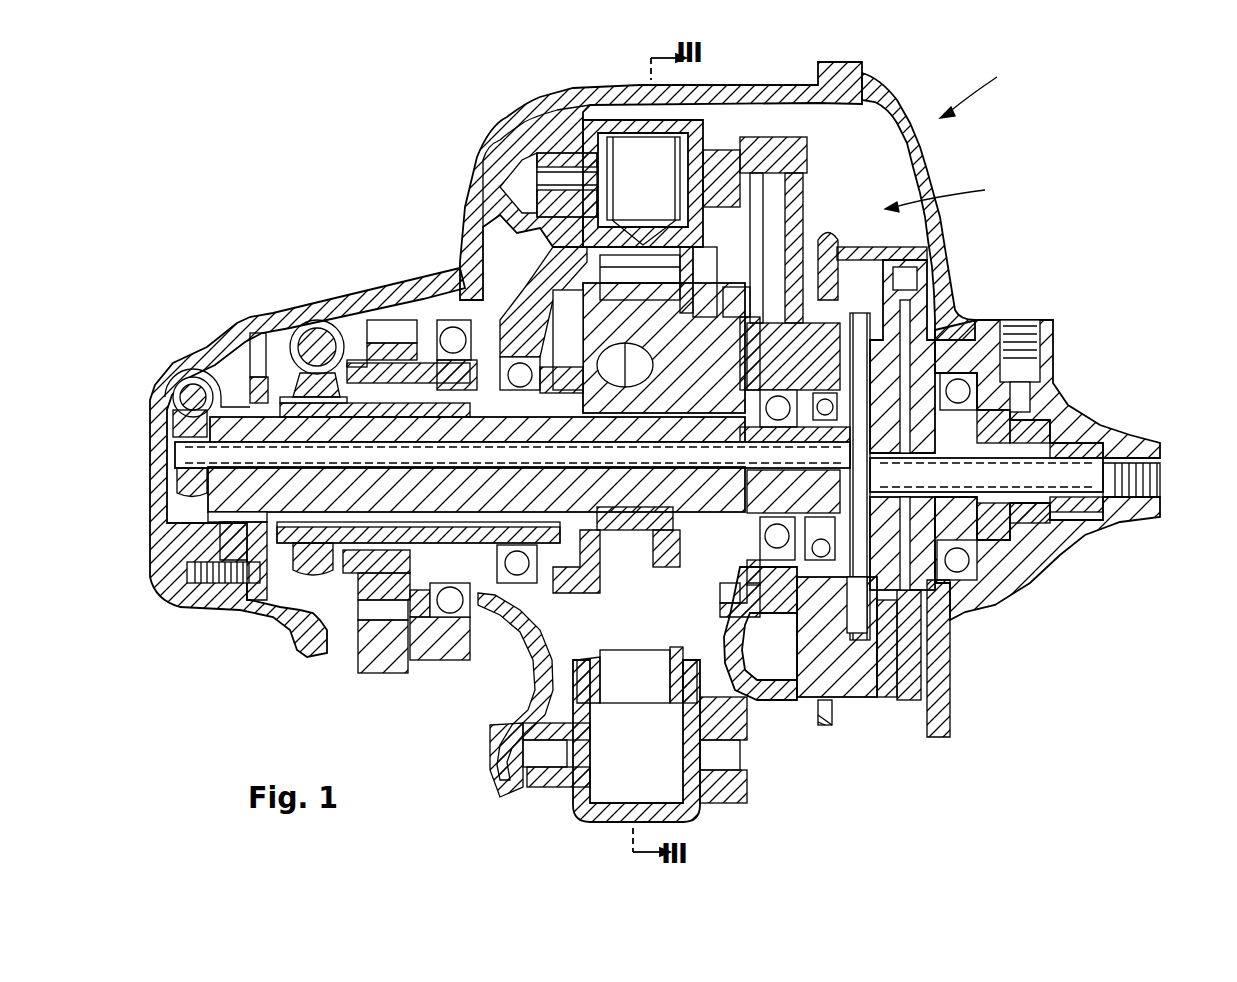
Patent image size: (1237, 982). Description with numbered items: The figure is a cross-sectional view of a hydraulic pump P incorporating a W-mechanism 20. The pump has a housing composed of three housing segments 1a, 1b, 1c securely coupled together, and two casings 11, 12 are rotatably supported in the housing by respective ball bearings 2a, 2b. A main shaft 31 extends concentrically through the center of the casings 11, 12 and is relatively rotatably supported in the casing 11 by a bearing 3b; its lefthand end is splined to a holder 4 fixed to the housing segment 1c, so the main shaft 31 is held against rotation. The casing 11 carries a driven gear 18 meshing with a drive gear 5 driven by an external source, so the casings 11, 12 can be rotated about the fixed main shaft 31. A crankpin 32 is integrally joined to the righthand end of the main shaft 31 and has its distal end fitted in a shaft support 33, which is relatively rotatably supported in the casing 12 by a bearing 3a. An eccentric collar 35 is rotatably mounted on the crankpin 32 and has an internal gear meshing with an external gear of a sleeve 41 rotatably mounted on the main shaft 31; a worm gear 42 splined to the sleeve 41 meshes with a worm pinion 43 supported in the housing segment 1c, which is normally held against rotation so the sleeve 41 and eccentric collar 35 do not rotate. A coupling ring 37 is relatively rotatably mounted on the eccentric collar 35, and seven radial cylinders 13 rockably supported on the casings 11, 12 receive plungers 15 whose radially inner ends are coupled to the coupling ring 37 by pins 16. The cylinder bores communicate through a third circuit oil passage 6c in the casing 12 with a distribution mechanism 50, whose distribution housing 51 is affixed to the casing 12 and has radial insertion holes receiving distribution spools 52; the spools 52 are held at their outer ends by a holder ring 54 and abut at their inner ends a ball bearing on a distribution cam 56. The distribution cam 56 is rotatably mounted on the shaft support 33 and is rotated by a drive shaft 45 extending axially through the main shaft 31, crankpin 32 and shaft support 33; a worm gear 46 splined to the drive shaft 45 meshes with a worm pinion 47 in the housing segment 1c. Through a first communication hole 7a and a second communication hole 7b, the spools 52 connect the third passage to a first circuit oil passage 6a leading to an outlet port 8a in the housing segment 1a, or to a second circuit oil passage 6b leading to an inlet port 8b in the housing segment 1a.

The housing segment 1a is at (928, 170).
The housing segment 1b is at (785, 86).
The housing segment 1c is at (380, 297).
The ball bearing 2a is at (967, 577).
The ball bearing 2b is at (473, 617).
The bearing 3a is at (790, 615).
The bearing 3b is at (545, 603).
The holder 4 is at (255, 333).
The drive gear 5 is at (383, 670).
The first circuit oil passage 6a is at (865, 352).
The second circuit oil passage 6b is at (907, 277).
The third circuit oil passage 6c is at (787, 180).
The first communication hole 7a is at (867, 348).
The second communication hole 7b is at (932, 247).
The outlet port 8a is at (1150, 480).
The inlet port 8b is at (1040, 347).
The casing 11 is at (517, 163).
The casing 12 is at (755, 140).
The cylinder 13 is at (678, 122).
The plunger 15 is at (607, 180).
The pin 16 is at (613, 278).
The driven gear 18 is at (367, 320).
The W-mechanism 20 is at (737, 275).
The main shaft 31 is at (325, 511).
The crankpin 32 is at (606, 436).
The shaft support 33 is at (750, 505).
The eccentric collar 35 is at (632, 362).
The coupling ring 37 is at (630, 537).
The sleeve 41 is at (393, 530).
The worm gear 42 is at (309, 572).
The worm pinion 43 is at (316, 330).
The drive shaft 45 is at (497, 477).
The worm gear 46 is at (182, 474).
The worm pinion 47 is at (197, 380).
The distribution mechanism 50 is at (952, 192).
The distribution housing 51 is at (862, 697).
The distribution spool 52 is at (831, 253).
The holder ring 54 is at (825, 733).
The distribution cam 56 is at (872, 685).
The hydraulic pump P is at (980, 89).